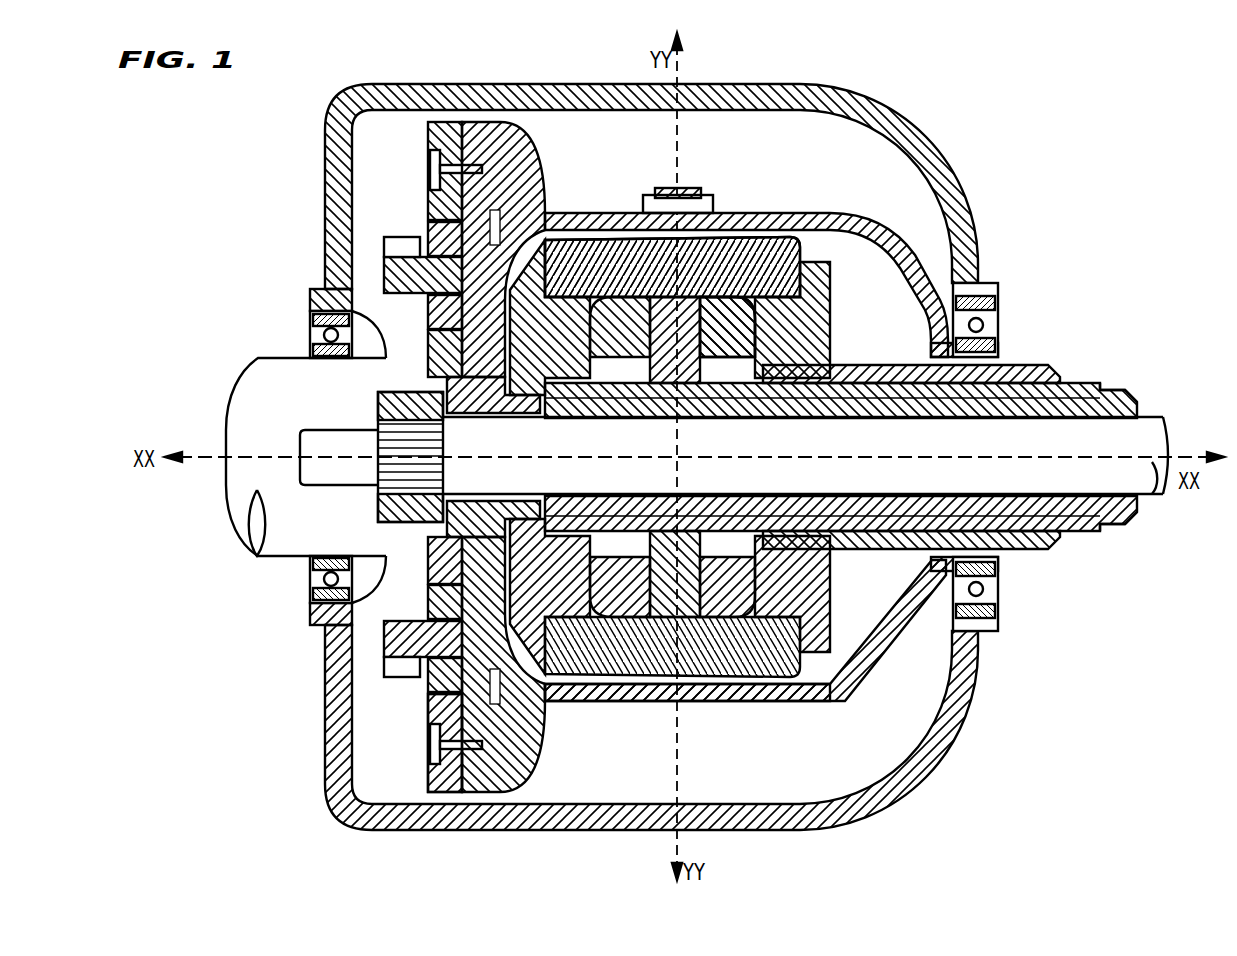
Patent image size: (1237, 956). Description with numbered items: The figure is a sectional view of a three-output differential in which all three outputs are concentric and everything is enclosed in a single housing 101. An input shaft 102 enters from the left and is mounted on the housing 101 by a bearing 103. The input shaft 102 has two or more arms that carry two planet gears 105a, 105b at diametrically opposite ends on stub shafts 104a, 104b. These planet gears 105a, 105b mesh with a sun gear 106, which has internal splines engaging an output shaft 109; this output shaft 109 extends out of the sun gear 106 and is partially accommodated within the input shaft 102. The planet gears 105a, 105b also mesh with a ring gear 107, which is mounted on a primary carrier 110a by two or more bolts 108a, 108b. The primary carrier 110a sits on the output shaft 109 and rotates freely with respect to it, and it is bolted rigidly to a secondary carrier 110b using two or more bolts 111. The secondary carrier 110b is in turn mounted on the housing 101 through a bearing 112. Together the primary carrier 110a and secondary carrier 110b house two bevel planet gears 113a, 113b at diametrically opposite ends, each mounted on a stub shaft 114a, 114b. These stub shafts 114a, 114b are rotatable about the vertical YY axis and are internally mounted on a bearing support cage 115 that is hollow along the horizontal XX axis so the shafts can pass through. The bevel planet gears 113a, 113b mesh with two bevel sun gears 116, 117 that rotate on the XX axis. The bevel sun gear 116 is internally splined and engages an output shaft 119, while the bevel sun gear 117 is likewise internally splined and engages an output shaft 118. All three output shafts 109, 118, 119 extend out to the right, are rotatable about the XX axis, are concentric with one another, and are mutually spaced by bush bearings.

The housing 101 is at (318, 290).
The input shaft 102 is at (364, 407).
The bearing 103 is at (318, 331).
The stub shaft 104a is at (392, 645).
The stub shaft 104b is at (395, 270).
The planet gear 105a is at (430, 690).
The planet gear 105b is at (428, 236).
The sun gear 106 is at (432, 562).
The ring gear 107 is at (432, 720).
The bolt 108a is at (484, 745).
The bolt 108b is at (440, 170).
The output shaft 109 is at (619, 452).
The primary carrier 110a is at (597, 702).
The secondary carrier 110b is at (757, 702).
The bolt 111 is at (706, 195).
The bearing 112 is at (960, 603).
The bevel planet gear 113a is at (818, 666).
The bevel planet gear 113b is at (748, 236).
The stub shaft 114a is at (688, 570).
The stub shaft 114b is at (688, 345).
The bearing support cage 115 is at (745, 326).
The bevel sun gear 116 is at (701, 419).
The bevel sun gear 117 is at (822, 285).
The output shaft 118 is at (1045, 367).
The output shaft 119 is at (1127, 393).